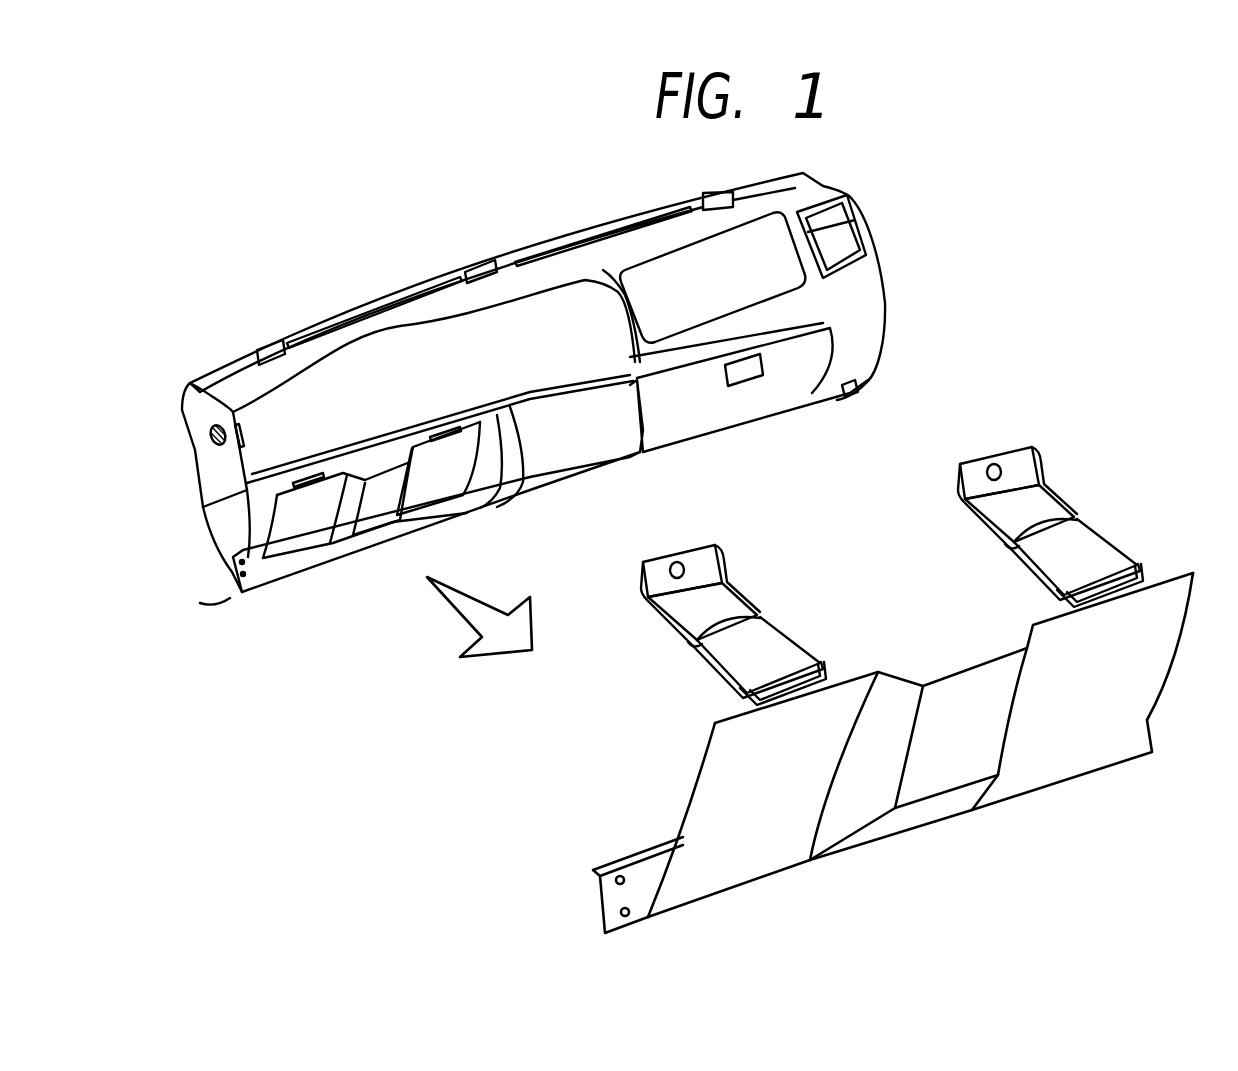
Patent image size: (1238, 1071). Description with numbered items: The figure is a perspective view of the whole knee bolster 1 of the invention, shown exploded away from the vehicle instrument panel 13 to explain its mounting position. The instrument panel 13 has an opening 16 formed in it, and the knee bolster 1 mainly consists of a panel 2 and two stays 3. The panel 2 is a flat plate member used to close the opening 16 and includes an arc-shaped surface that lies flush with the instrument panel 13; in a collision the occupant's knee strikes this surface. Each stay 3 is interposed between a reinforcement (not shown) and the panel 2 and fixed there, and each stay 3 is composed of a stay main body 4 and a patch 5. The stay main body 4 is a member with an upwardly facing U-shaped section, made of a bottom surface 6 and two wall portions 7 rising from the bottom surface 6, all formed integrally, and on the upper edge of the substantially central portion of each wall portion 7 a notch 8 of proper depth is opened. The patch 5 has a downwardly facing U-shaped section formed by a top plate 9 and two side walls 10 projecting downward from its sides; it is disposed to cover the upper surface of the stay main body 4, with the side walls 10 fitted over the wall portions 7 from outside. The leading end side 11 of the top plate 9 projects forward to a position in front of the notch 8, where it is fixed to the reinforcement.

The knee bolster 1 is at (1090, 498).
The panel 2 is at (1137, 690).
The stay 3 is at (687, 650).
The stay main body 4 is at (708, 609).
The patch 5 is at (770, 654).
The bottom surface 6 is at (668, 605).
The wall portion 7 is at (640, 588).
The notch 8 is at (690, 643).
The top plate 9 is at (825, 660).
The side wall 10 is at (740, 686).
The leading end side 11 is at (740, 622).
The instrument panel 13 is at (652, 232).
The opening 16 is at (455, 470).